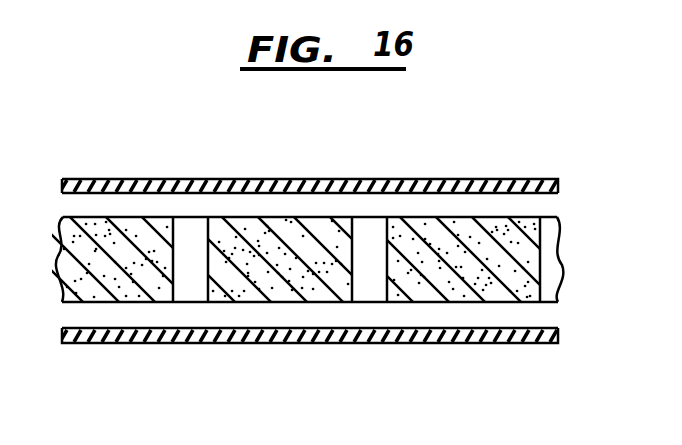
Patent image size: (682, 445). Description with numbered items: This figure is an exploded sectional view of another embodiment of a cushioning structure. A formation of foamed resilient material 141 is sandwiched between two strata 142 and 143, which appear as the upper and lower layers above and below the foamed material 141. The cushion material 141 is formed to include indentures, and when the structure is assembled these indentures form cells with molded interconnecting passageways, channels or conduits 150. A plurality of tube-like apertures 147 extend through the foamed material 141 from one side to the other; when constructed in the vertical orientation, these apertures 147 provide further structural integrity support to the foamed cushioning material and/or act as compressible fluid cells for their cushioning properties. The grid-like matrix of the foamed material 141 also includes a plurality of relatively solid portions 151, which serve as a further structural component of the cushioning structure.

The foamed resilient material 141 is at (108, 268).
The stratum 142 is at (512, 178).
The stratum 143 is at (146, 343).
The tube-like apertures 147 is at (191, 292).
The interconnecting passageways 150 is at (128, 215).
The solid portions 151 is at (109, 215).